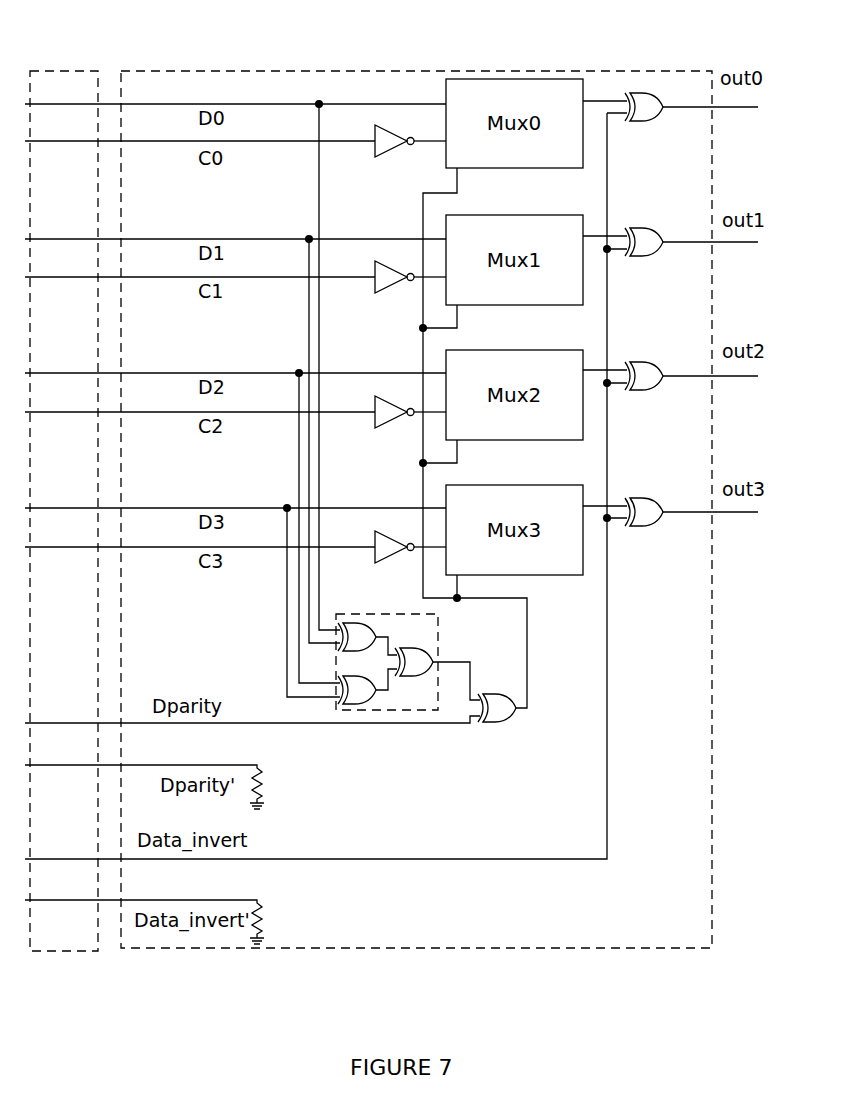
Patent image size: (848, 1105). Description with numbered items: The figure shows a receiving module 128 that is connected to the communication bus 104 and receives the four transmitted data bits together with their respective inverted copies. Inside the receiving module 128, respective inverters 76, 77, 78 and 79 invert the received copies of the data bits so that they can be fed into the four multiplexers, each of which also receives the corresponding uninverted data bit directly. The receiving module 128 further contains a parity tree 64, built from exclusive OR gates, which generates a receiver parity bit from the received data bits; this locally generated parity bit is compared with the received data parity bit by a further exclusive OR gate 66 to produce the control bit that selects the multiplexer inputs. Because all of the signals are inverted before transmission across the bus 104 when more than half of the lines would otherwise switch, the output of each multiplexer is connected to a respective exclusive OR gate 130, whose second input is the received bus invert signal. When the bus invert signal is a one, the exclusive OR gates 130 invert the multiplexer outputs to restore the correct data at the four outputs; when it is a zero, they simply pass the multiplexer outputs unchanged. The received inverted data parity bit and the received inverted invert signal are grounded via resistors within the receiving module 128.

The inverter 76 is at (392, 130).
The inverter 77 is at (386, 290).
The inverter 78 is at (386, 425).
The inverter 79 is at (386, 560).
The exclusive OR gate 130 is at (657, 92).
The parity tree 64 is at (370, 712).
The select XOR gate (s0) 66 is at (503, 721).
The communication bus 104 is at (77, 952).
The receiving module 128 is at (558, 948).